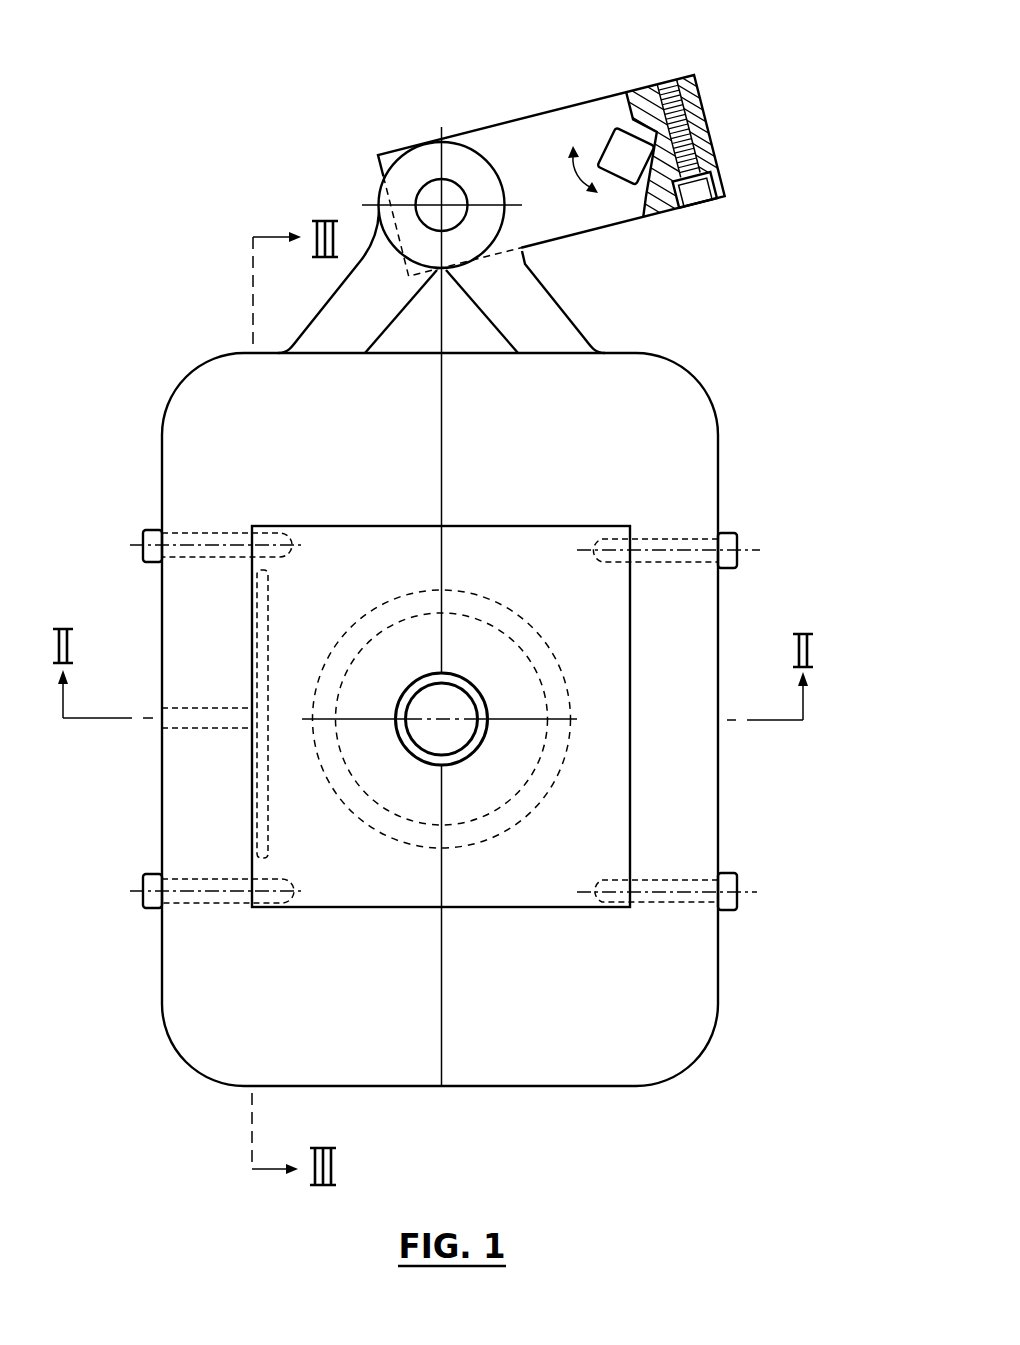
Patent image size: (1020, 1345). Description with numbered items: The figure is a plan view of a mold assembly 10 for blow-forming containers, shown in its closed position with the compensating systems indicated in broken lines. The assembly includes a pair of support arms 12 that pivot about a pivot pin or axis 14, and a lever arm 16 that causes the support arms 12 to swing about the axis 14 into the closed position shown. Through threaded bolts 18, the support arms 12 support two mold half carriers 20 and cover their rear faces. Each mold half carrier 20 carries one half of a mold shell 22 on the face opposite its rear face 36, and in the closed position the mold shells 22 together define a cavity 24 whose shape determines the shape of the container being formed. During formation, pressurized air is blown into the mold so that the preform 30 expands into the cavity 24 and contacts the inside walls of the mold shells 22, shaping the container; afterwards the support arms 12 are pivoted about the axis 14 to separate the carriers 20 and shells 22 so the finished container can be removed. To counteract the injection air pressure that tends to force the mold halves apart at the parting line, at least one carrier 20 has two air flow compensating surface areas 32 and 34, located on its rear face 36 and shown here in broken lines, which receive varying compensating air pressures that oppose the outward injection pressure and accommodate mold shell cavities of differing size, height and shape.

The mold assembly 10 is at (622, 310).
The support arms 12 is at (365, 1063).
The pivot pin or axis 14 is at (433, 193).
The lever arm 16 is at (520, 127).
The threaded bolts 18 is at (143, 542).
The mold half carriers 20 is at (564, 614).
The mold shell 22 is at (345, 684).
The cavity 24 is at (467, 794).
The preform 30 is at (463, 735).
The air flow compensating surface area 32 is at (246, 742).
The air flow compensating surface area 34 is at (258, 607).
The rear face 36 is at (253, 562).